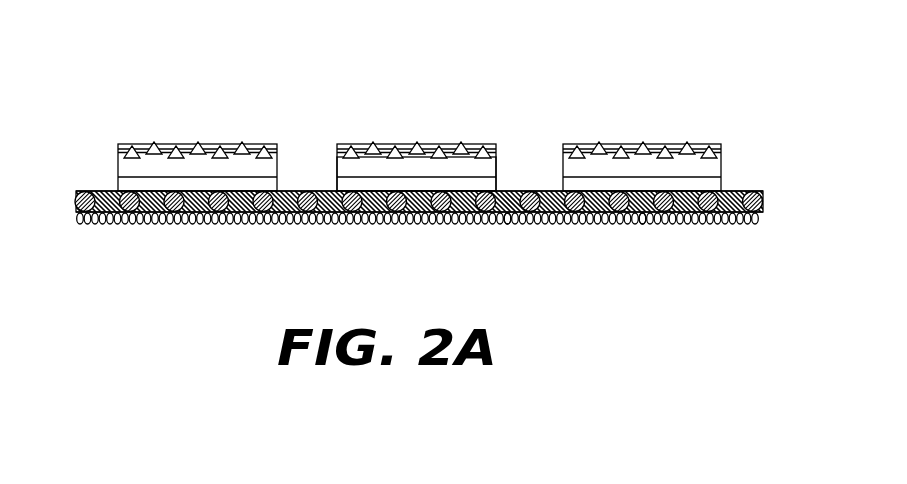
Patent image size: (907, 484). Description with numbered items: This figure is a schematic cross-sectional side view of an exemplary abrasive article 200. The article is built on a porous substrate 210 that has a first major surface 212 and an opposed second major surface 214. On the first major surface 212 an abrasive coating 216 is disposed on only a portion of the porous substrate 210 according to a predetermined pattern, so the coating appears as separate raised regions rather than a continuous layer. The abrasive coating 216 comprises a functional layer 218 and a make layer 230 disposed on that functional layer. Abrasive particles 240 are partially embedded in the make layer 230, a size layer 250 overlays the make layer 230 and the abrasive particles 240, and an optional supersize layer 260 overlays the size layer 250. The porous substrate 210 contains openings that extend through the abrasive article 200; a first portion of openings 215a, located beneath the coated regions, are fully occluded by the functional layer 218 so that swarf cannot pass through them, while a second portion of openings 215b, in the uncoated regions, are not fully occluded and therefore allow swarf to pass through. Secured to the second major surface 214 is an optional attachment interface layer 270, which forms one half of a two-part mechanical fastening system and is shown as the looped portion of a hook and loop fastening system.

The abrasive article 200 is at (733, 81).
The porous substrate 210 is at (764, 202).
The first major surface 212 is at (95, 192).
The second major surface 214 is at (95, 214).
The first portion of openings 215a is at (642, 212).
The second portion of openings 215b is at (509, 212).
The abrasive coating 216 is at (210, 142).
The functional layer 218 is at (723, 183).
The make layer 230 is at (498, 167).
The abrasive particles 240 is at (172, 143).
The size layer 250 is at (334, 150).
The supersize layer 260 is at (498, 150).
The attachment interface layer 270 is at (757, 218).